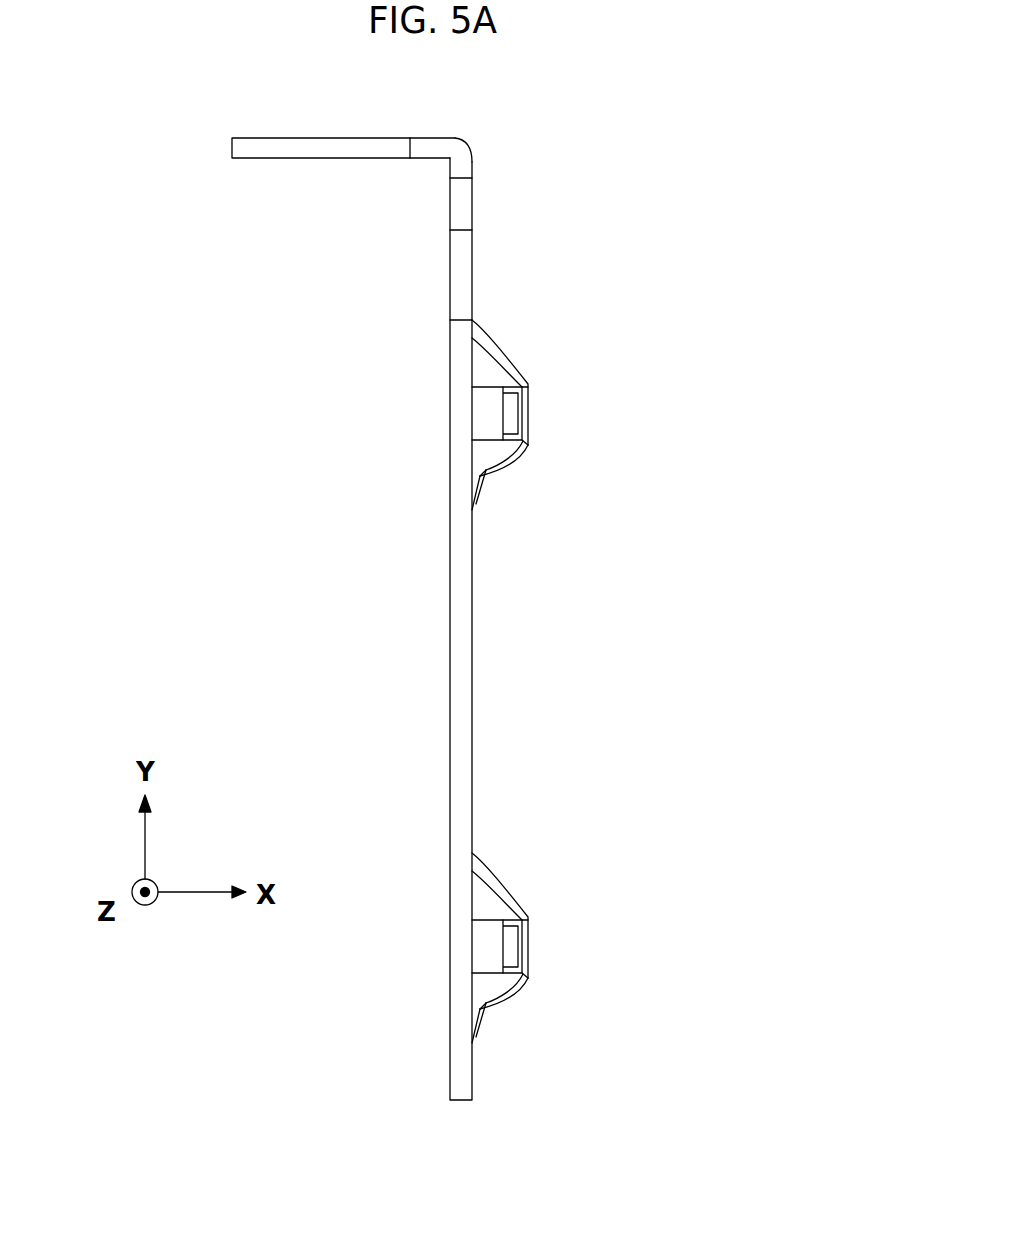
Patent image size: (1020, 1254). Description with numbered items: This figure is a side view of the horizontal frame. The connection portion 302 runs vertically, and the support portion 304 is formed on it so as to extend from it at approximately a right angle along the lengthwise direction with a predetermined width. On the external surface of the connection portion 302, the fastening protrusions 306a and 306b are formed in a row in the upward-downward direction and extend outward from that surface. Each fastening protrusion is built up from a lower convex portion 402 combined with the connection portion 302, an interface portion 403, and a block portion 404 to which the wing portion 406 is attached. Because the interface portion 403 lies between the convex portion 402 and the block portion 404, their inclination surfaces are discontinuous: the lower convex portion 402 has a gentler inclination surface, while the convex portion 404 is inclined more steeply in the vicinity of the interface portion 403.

The connection portion 302 is at (462, 237).
The support portion 304 is at (292, 152).
The fastening protrusion 306a is at (520, 465).
The fastening protrusion 306b is at (562, 914).
The convex portion 402 is at (488, 498).
The interface portion 403 is at (490, 478).
The block portion 404 is at (520, 470).
The wing portion 406 is at (512, 415).